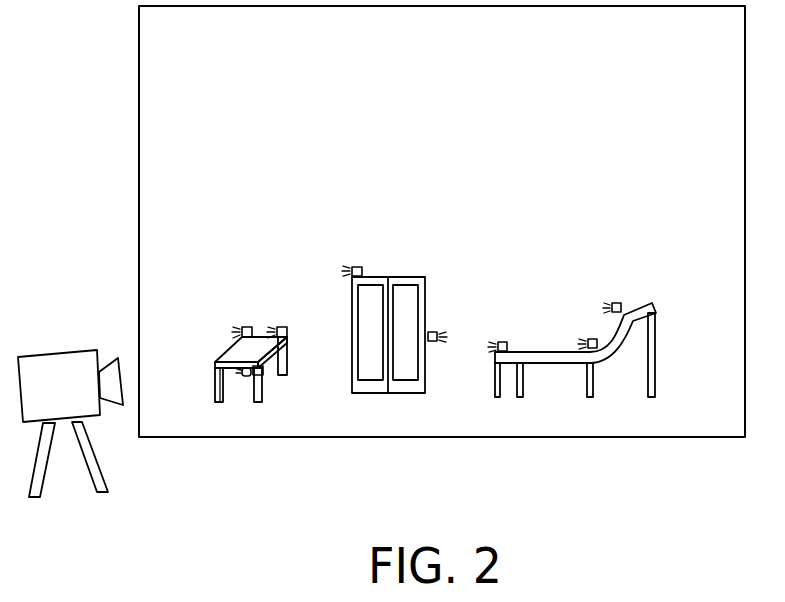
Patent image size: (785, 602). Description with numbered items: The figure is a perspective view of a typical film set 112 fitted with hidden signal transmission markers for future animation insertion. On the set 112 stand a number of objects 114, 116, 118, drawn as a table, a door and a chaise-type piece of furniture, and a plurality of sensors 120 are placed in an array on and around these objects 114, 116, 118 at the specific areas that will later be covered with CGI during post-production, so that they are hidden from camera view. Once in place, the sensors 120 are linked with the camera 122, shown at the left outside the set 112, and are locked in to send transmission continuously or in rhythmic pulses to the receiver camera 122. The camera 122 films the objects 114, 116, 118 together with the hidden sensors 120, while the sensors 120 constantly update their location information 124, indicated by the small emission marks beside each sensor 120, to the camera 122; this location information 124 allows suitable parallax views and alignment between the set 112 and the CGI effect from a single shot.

The film set 112 is at (139, 88).
The object 114 is at (258, 336).
The object 116 is at (400, 277).
The object 118 is at (640, 305).
The sensor 120 is at (245, 327).
The camera 122 is at (52, 352).
The location information 124 is at (238, 330).